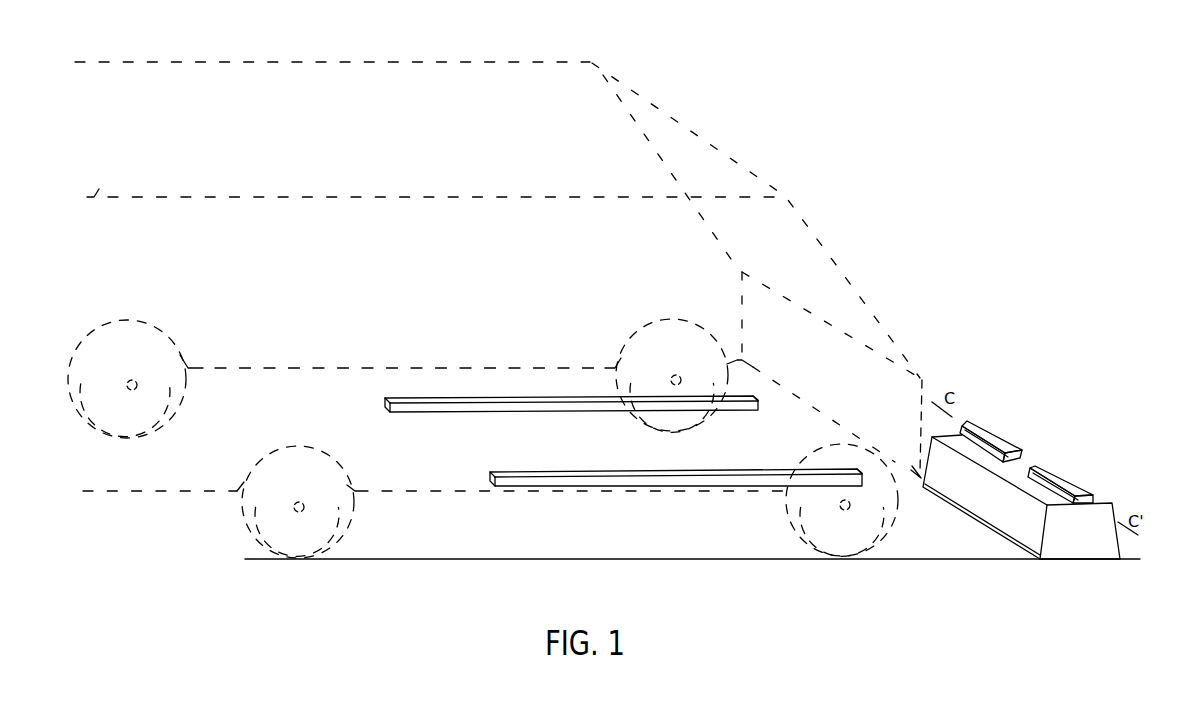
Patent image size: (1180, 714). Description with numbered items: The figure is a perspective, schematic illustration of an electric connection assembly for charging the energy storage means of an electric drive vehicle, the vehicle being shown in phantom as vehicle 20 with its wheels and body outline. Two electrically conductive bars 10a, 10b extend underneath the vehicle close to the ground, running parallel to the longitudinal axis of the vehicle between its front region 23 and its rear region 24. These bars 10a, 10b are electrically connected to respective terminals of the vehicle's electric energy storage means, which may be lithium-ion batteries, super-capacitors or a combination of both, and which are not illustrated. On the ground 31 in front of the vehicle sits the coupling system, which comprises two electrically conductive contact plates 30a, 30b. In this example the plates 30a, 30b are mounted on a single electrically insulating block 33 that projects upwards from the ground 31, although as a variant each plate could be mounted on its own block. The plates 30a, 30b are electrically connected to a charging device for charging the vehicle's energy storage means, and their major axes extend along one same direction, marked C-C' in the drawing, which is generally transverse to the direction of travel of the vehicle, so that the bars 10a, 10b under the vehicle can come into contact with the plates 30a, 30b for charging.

The vehicle 20 is at (716, 94).
The rear region 24 is at (100, 187).
The front region 23 is at (922, 378).
The electrically conductive bar 10a is at (488, 413).
The electrically conductive bar 10b is at (587, 480).
The electrically conductive contact plate 30a is at (983, 433).
The electrically conductive contact plate 30b is at (1065, 483).
The electrically insulating block 33 is at (1030, 442).
The ground 31 is at (917, 561).